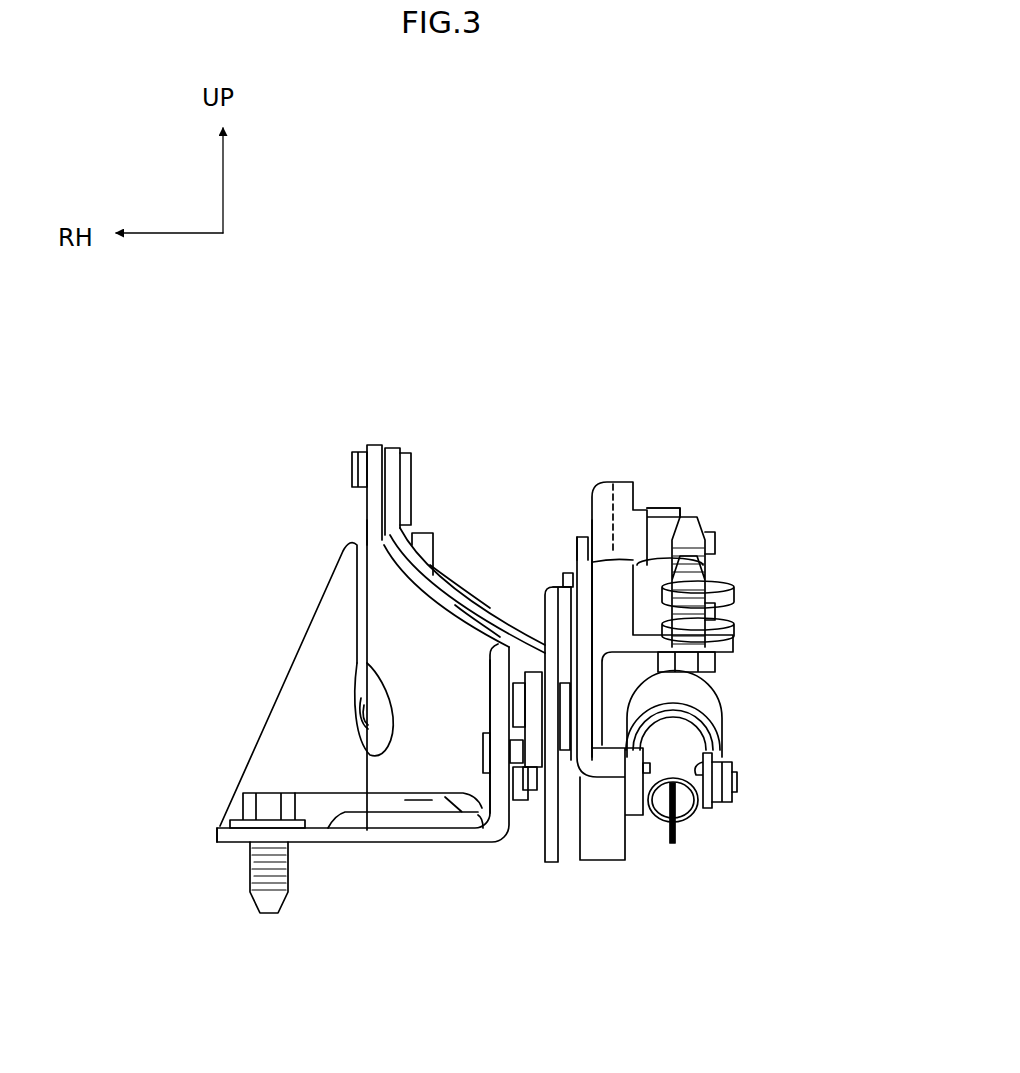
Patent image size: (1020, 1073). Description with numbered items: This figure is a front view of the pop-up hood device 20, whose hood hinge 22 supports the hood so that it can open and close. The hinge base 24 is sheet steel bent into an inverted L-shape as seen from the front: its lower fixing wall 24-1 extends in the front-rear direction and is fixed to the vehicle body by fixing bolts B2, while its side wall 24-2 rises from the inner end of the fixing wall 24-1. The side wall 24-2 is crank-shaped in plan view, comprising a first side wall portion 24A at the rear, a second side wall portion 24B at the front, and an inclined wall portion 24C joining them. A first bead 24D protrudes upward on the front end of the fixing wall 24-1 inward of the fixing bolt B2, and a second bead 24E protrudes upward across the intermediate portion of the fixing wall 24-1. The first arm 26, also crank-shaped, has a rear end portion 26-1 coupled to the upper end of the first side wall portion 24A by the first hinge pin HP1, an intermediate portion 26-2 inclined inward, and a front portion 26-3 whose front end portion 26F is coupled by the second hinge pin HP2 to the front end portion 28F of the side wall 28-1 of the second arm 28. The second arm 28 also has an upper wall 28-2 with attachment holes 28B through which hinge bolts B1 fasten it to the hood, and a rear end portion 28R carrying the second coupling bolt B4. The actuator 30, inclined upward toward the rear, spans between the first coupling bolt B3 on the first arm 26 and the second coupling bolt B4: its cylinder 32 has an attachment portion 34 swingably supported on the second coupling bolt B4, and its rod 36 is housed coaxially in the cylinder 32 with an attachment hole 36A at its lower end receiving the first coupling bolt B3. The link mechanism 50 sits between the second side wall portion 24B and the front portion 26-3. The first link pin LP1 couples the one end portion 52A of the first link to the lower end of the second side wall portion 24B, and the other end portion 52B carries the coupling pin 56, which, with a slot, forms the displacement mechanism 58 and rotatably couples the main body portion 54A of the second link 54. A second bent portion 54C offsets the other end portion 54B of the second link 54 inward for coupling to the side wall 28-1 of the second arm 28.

The PUH device 20 is at (674, 300).
The hood hinge 22 is at (290, 410).
The hinge base 24 is at (214, 848).
The first side wall portion 24A is at (367, 497).
The second side wall portion 24B is at (470, 812).
The inclined wall portion 24C is at (370, 782).
The first bead 24D is at (340, 815).
The second bead 24E is at (360, 793).
The fixing wall 24-1 is at (223, 823).
The side wall 24-2 is at (357, 545).
The first arm 26 is at (392, 436).
The rear end portion 26-1 is at (398, 448).
The intermediate portion 26-2 is at (462, 578).
The front portion 26-3 is at (565, 862).
The front end portion 26F is at (586, 835).
The second arm 28 is at (623, 473).
The side wall 28-1 is at (578, 532).
The upper wall 28-2 is at (736, 588).
The attachment holes 28B is at (718, 568).
The front end portion 28F is at (578, 703).
The rear end portion 28R is at (590, 548).
The actuator 30 is at (690, 830).
The cylinder 32 is at (661, 505).
The attachment portion 34 is at (681, 515).
The rod 36 is at (699, 812).
The attachment hole 36A is at (718, 770).
The link mechanism 50 is at (521, 822).
The one end portion 52A is at (510, 812).
The other end portion 52B is at (522, 713).
The second link 54 is at (541, 618).
The main body portion 54A is at (460, 622).
The other end portion 54B is at (548, 560).
The second bent portion 54C is at (548, 586).
The coupling pin 56 is at (520, 693).
The displacement mechanism 58 is at (565, 716).
The hinge bolts B1 is at (700, 510).
The fixing bolts B2 is at (262, 917).
The first coupling bolt B3 is at (738, 788).
The second coupling bolt B4 is at (718, 545).
The first hinge pin HP1 is at (413, 473).
The second hinge pin HP2 is at (637, 707).
The first link pin LP1 is at (485, 762).